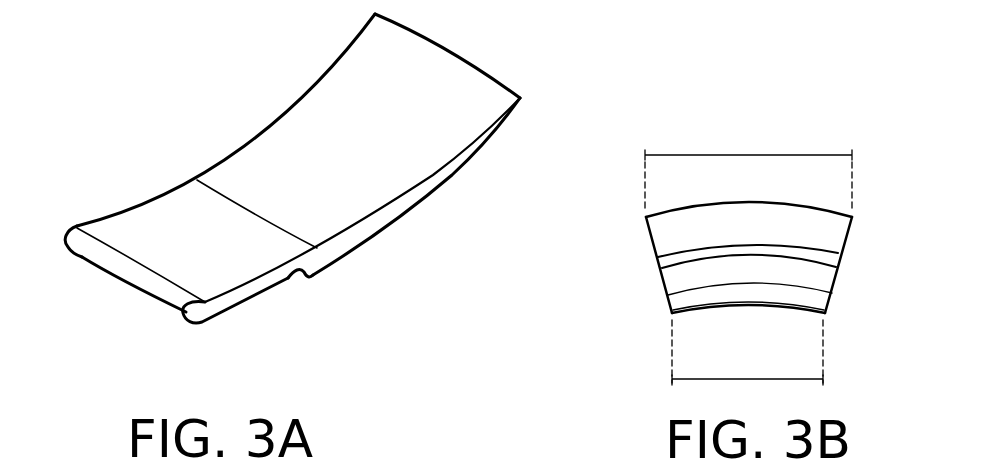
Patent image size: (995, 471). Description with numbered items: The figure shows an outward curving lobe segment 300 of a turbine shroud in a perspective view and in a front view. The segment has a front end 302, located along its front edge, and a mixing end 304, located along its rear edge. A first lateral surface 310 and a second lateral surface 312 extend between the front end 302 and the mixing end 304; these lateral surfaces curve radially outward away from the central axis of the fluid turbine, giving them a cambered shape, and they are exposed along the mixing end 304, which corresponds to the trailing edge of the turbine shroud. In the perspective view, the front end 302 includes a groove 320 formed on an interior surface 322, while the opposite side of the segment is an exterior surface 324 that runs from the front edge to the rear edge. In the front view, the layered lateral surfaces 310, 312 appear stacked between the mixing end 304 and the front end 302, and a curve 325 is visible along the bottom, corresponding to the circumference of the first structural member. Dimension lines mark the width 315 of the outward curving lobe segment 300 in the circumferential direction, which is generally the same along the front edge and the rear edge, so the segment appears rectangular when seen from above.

In FIG. 3A, the outward curving lobe segment 300 is at (152, 66).
In FIG. 3B, the outward curving lobe segment 300 is at (900, 113).
In FIG. 3A, the front end 302 is at (135, 230).
In FIG. 3B, the front end 302 is at (808, 299).
In FIG. 3A, the mixing end 304 is at (492, 72).
In FIG. 3B, the mixing end 304 is at (812, 207).
In FIG. 3A, the first lateral surface 310 is at (393, 215).
In FIG. 3B, the first lateral surface 310 is at (835, 287).
In FIG. 3B, the second lateral surface 312 is at (670, 293).
In FIG. 3B, the width 315 is at (748, 256).
In FIG. 3A, the groove 320 is at (303, 283).
In FIG. 3A, the interior surface 322 is at (227, 318).
In FIG. 3A, the exterior surface 324 is at (320, 152).
In FIG. 3B, the exterior surface 324 is at (662, 235).
In FIG. 3B, the curve 325 is at (733, 307).